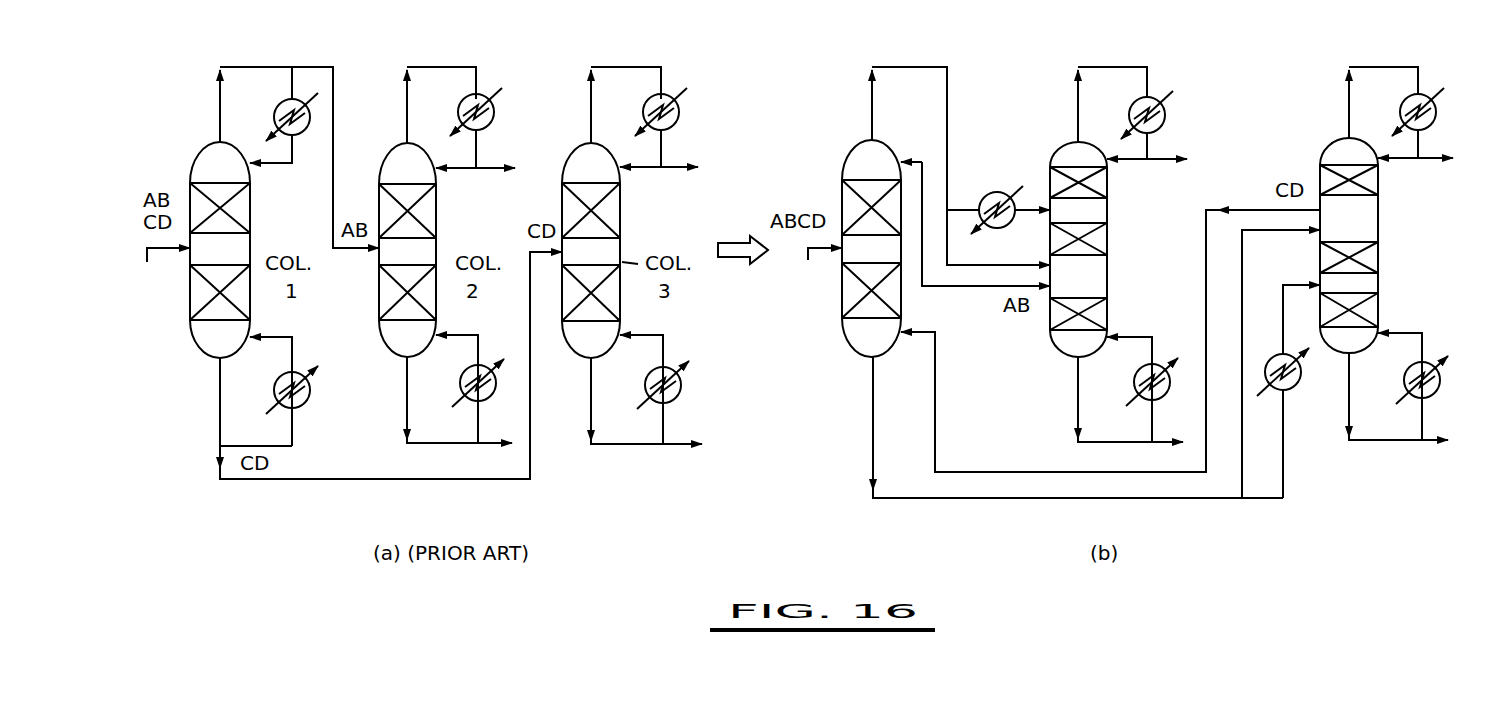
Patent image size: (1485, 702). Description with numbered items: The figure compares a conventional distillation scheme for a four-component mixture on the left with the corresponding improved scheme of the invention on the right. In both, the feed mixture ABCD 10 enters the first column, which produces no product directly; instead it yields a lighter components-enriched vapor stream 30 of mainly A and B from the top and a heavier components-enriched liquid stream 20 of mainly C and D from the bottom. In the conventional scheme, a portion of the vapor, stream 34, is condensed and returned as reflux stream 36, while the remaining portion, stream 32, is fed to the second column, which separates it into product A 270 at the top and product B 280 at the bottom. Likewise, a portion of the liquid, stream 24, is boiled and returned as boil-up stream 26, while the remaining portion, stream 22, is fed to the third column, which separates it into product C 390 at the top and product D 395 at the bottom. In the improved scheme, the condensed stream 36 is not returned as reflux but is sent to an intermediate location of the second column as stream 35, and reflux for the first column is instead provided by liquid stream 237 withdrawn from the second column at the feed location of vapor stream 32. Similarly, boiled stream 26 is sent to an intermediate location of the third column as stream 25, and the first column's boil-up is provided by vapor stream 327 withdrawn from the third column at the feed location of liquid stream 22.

The feed mixture ABCD stream 10 is at (494, 271).
The heavier components-enriched liquid stream 20 is at (220, 394).
The liquid stream fed to third column 22 is at (304, 481).
The boiled portion of liquid stream 24 is at (294, 424).
The boiled stream to third column 25 is at (1310, 283).
The boil-up stream 26 is at (290, 334).
The lighter components-enriched vapor stream 30 is at (218, 92).
The vapor stream fed to second column 32 is at (314, 66).
The condensed portion of vapor stream 34 is at (290, 78).
The condensed stream to second column 35 is at (1037, 207).
The reflux stream 36 is at (300, 158).
The liquid reflux stream from second column 237 is at (965, 288).
The product A stream 270 is at (492, 170).
The product B stream 280 is at (488, 447).
The vapor boil-up stream from third column 327 is at (1250, 209).
The product C stream 390 is at (677, 170).
The product D stream 395 is at (680, 447).